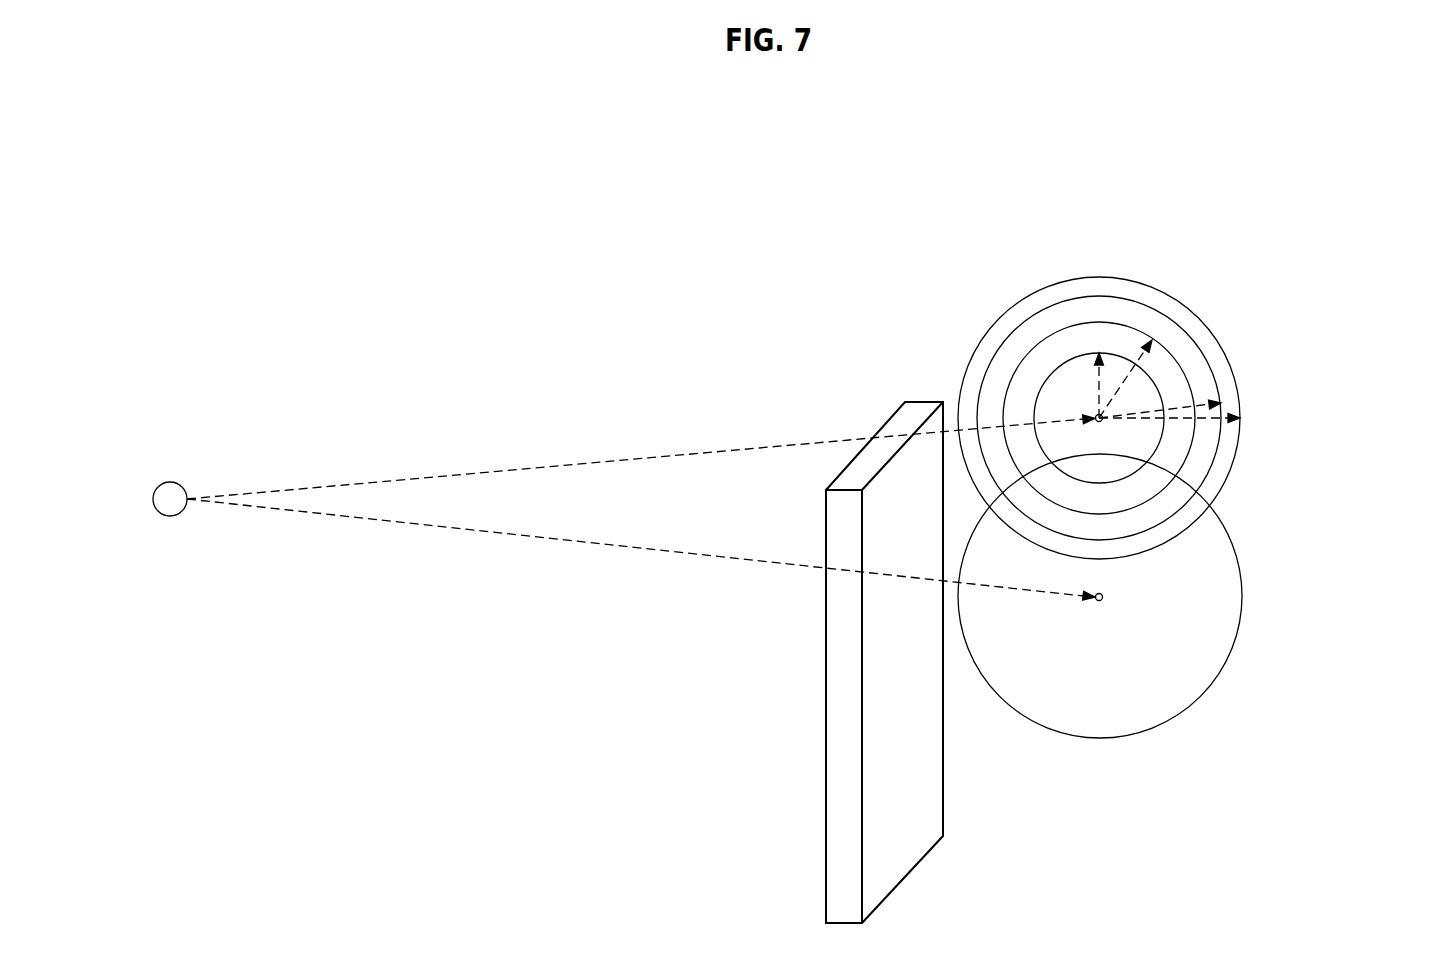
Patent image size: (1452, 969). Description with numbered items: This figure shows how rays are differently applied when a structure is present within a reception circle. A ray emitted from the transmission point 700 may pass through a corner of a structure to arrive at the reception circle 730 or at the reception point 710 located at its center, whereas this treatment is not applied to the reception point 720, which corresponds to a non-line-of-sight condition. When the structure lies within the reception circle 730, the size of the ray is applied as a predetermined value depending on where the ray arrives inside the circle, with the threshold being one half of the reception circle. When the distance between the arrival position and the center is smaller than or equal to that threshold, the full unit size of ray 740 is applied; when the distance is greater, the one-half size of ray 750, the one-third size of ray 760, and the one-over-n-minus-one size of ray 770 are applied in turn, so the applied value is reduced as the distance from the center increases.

The transmission point 700 is at (166, 516).
The reception point 710 is at (1100, 445).
The reception point 720 is at (1100, 596).
The reception circle 730 is at (1099, 402).
The 1 size of ray 740 is at (1097, 388).
The 1/2 size of ray 750 is at (1179, 417).
The 1/3 size of ray 760 is at (1198, 418).
The 1/(n-1) size of ray 770 is at (1265, 441).